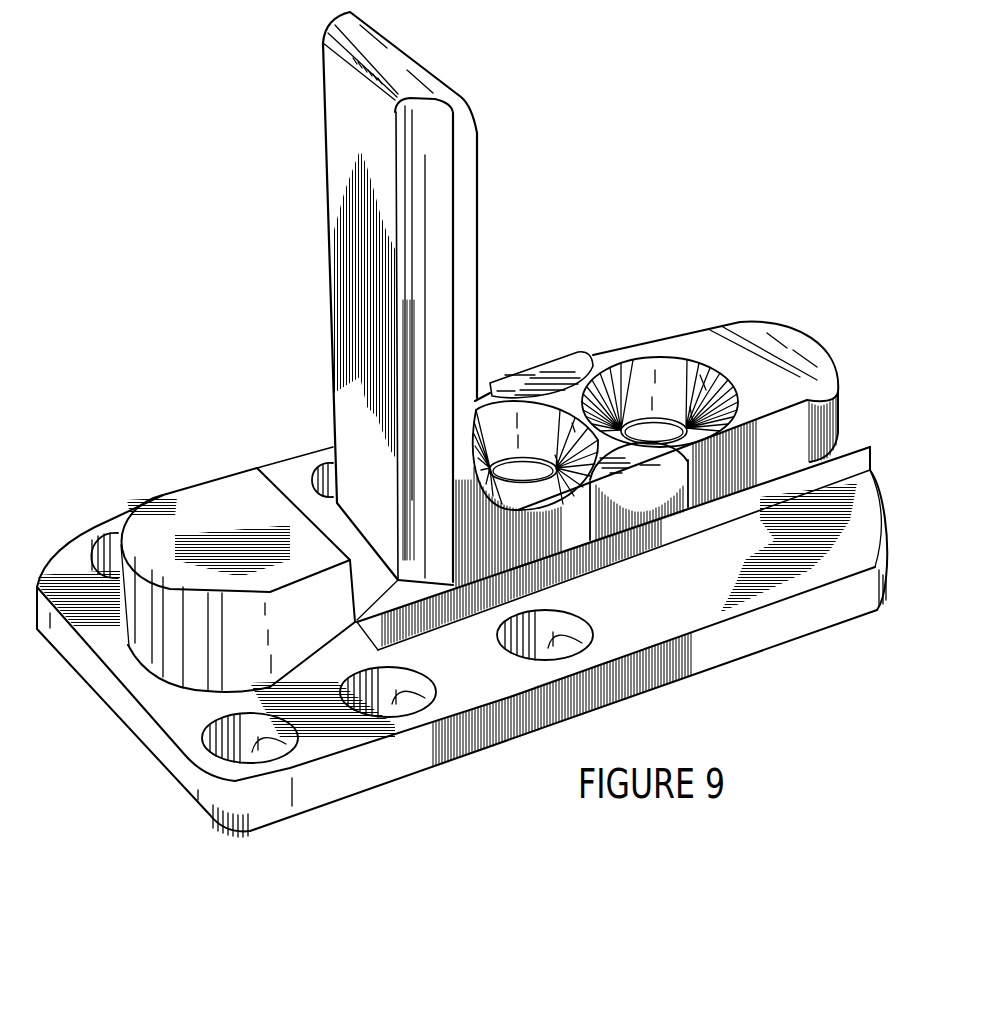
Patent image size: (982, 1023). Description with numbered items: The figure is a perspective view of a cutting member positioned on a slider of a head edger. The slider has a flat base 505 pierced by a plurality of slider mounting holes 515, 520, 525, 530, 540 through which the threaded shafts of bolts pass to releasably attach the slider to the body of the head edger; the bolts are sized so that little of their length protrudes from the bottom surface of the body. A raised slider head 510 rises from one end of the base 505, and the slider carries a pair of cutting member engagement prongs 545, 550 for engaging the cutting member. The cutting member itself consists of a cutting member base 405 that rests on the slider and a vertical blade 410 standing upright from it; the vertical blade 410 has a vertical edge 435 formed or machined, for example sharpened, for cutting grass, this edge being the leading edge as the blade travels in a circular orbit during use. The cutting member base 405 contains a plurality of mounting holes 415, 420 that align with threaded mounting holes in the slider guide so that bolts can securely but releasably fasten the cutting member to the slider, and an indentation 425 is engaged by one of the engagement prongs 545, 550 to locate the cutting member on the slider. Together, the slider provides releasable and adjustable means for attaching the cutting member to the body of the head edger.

The cutting member base 405 is at (787, 397).
The vertical blade 410 is at (343, 109).
The mounting hole 415 is at (690, 415).
The mounting hole 420 is at (522, 473).
The indentation 425 is at (622, 432).
The vertical edge 435 is at (455, 230).
The base 505 is at (690, 585).
The slider head 510 is at (248, 480).
The slider mounting hole 515 is at (582, 645).
The cutting member mounting hole 520 is at (428, 697).
The slider mounting hole 525 is at (298, 748).
The slider mounting hole 530 is at (330, 450).
The slider mounting hole 540 is at (110, 540).
The cutting member engagement prong 545 is at (548, 372).
The cutting member engagement prong 550 is at (647, 462).